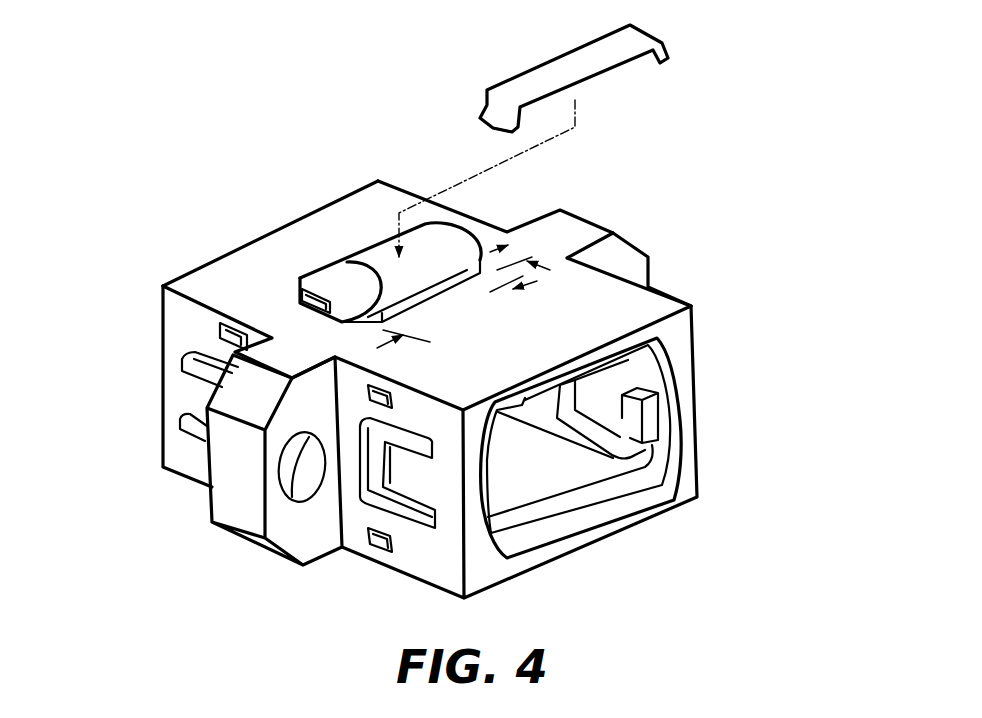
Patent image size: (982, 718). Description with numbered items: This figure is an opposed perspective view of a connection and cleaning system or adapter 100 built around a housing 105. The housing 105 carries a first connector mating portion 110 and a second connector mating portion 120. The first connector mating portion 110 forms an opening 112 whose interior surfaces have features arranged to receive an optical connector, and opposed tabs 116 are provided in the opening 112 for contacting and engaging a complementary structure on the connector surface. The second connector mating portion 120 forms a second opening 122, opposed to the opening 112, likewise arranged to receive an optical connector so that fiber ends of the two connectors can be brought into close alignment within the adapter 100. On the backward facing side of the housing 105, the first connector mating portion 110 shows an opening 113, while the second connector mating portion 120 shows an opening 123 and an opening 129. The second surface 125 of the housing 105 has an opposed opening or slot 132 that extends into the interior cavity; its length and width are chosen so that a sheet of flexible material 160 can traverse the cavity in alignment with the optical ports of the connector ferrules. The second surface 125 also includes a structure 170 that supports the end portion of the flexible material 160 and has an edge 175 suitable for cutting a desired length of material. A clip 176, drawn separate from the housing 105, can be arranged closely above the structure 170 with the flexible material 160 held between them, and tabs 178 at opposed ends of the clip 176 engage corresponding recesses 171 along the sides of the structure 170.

The adapter 100 is at (166, 160).
The housing 105 is at (163, 322).
The first connector mating portion 110 is at (730, 281).
The opening 112 is at (665, 537).
The opening 113 is at (226, 328).
The opposed tabs 116 is at (628, 425).
The second connector mating portion 120 is at (238, 568).
The second opening 122 is at (248, 228).
The opening 123 is at (383, 392).
The second surface 125 is at (594, 319).
The opening 129 is at (381, 548).
The opposed opening or slot 132 is at (361, 327).
The supply of flexible material 160 is at (443, 255).
The structure 170 is at (330, 279).
The recesses 171 is at (320, 294).
The edge 175 is at (370, 238).
The clip 176 is at (498, 98).
The tabs 178 is at (490, 125).